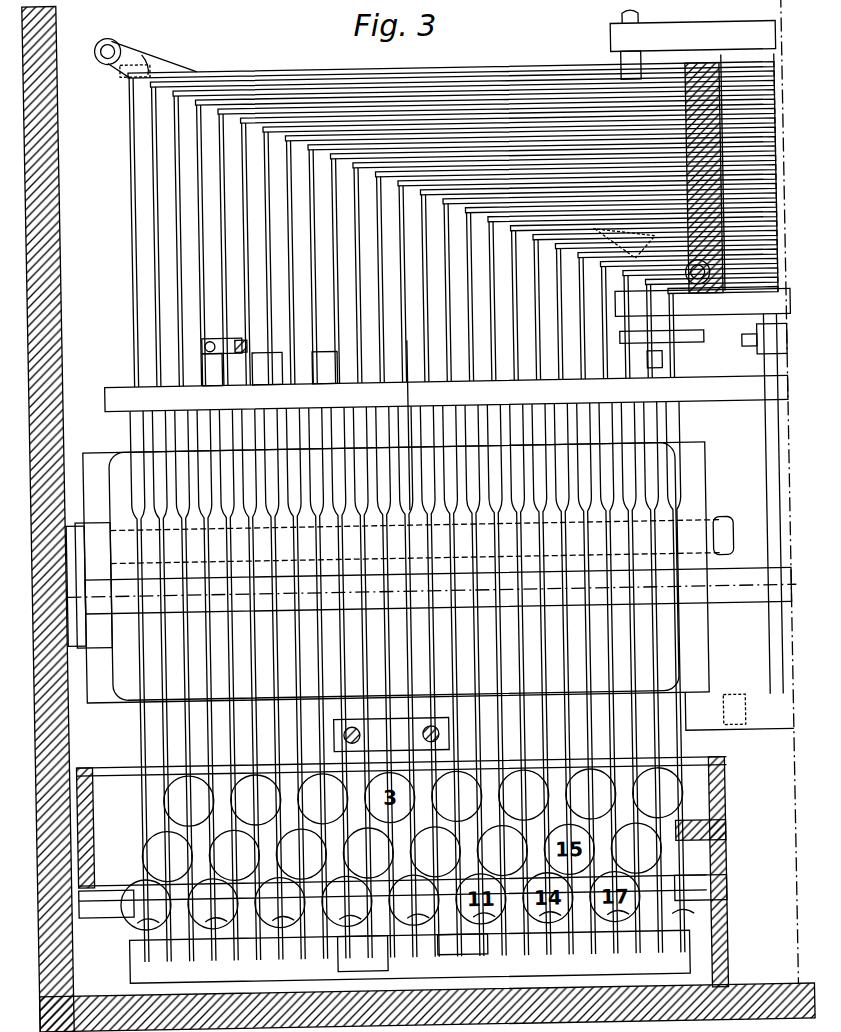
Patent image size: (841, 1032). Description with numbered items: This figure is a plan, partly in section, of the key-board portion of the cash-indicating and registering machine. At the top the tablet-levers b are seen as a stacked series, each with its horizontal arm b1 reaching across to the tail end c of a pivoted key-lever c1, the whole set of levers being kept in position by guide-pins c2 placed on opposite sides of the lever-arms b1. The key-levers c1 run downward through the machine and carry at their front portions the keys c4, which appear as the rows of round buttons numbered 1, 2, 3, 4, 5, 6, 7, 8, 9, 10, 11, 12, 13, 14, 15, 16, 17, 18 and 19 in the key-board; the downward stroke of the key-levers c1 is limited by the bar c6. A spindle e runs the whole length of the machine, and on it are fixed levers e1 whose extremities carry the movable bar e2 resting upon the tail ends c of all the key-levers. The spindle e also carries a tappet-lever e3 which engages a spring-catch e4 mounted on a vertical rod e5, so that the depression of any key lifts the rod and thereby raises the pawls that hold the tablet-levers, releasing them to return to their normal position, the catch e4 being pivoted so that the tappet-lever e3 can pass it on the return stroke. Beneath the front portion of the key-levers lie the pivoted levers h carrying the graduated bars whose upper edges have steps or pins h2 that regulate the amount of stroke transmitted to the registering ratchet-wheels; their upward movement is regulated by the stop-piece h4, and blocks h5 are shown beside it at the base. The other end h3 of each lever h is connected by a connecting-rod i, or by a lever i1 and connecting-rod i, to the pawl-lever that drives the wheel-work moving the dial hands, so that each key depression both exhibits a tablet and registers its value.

The tablet-lever b is at (453, 179).
The horizontal arm of tablet-lever b1 is at (240, 80).
The tail end of key-lever c is at (399, 515).
The key-lever c1 is at (402, 804).
The guide-pin c2 is at (160, 66).
The key c4 is at (574, 874).
The bar c6 is at (403, 896).
The spindle e is at (435, 579).
The lever e1 is at (405, 572).
The movable bar e2 is at (446, 389).
The tappet-lever e3 is at (735, 521).
The spring-catch e4 is at (661, 327).
The vertical rod e5 is at (762, 340).
The lever h is at (399, 721).
The graduated steps or pins h2 is at (363, 954).
The end of lever h3 is at (215, 366).
The stop-piece h4 is at (412, 946).
The base block h5 is at (433, 935).
The connecting-rod i is at (218, 338).
The lever i1 is at (357, 362).
The key 1 is at (146, 905).
The key 2 is at (167, 856).
The key 3 is at (188, 801).
The key 4 is at (212, 903).
The key 5 is at (234, 855).
The key 6 is at (255, 800).
The key 7 is at (279, 902).
The key 8 is at (301, 854).
The key 9 is at (322, 798).
The key 10 is at (456, 796).
The key 11 is at (346, 901).
The key 12 is at (502, 850).
The key 13 is at (523, 795).
The key 14 is at (413, 900).
The key 15 is at (435, 851).
The key 16 is at (590, 794).
The key 17 is at (368, 853).
The key 18 is at (636, 848).
The key 19 is at (657, 792).